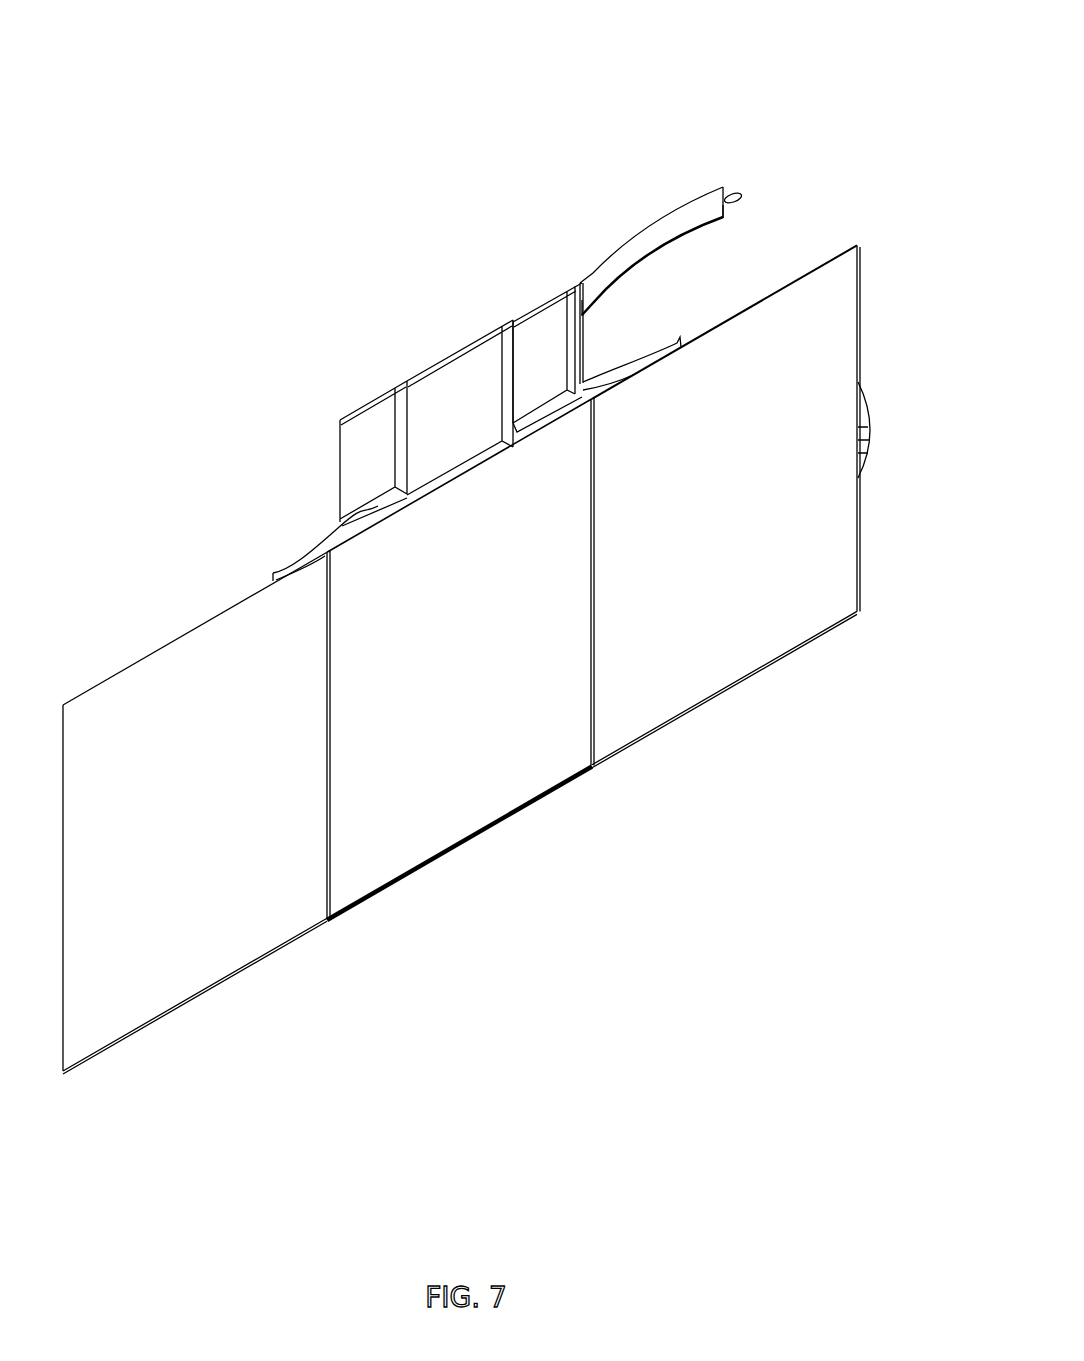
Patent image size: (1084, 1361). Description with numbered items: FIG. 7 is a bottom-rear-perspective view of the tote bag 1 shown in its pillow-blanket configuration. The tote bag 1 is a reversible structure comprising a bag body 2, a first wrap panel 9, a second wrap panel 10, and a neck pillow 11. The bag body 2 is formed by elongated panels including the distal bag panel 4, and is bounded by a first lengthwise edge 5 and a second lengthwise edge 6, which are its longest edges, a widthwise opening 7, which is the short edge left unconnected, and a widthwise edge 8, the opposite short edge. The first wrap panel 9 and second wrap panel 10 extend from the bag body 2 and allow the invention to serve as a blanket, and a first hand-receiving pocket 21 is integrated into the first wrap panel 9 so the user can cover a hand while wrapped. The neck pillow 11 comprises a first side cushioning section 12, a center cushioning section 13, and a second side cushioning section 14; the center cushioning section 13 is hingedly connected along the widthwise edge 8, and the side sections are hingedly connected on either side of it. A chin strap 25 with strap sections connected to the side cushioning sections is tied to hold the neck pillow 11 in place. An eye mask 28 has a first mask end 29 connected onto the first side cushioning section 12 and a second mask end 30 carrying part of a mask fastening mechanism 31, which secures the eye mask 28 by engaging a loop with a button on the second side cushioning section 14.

The tote bag 1 is at (593, 50).
The bag body 2 is at (492, 934).
The distal bag panel 4 is at (347, 652).
The first lengthwise edge 5 is at (590, 644).
The second lengthwise edge 6 is at (331, 698).
The widthwise opening 7 is at (479, 841).
The widthwise edge 8 is at (444, 491).
The first wrap panel 9 is at (735, 680).
The second wrap panel 10 is at (148, 666).
The neck pillow 11 is at (400, 247).
The first side cushioning section 12 is at (553, 315).
The center cushioning section 13 is at (458, 372).
The second side cushioning section 14 is at (373, 412).
The first hand-receiving pocket 21 is at (864, 437).
The chin strap 25 is at (318, 552).
The eye mask 28 is at (663, 220).
The first mask end 29 is at (589, 294).
The second mask end 30 is at (718, 214).
The mask fastening mechanism 31 is at (735, 190).